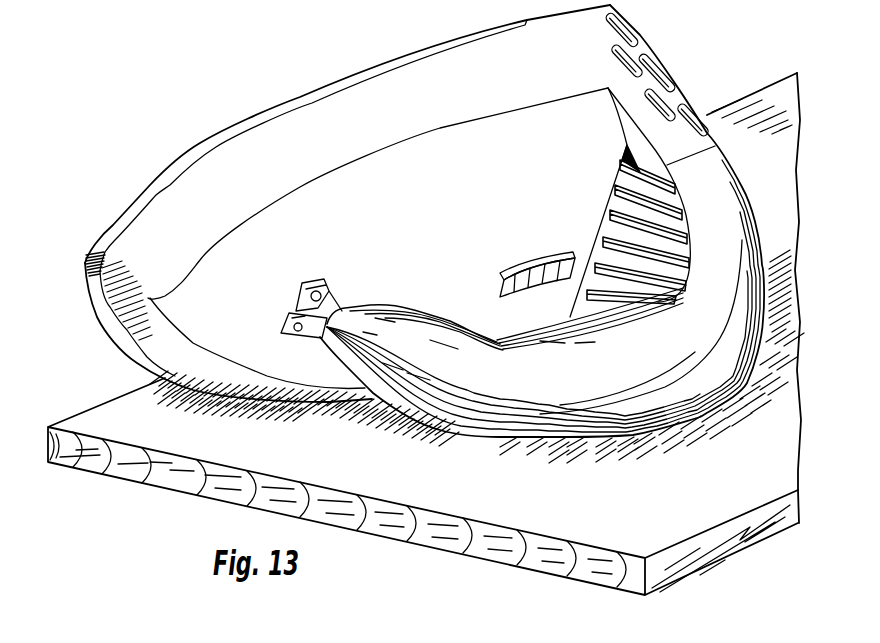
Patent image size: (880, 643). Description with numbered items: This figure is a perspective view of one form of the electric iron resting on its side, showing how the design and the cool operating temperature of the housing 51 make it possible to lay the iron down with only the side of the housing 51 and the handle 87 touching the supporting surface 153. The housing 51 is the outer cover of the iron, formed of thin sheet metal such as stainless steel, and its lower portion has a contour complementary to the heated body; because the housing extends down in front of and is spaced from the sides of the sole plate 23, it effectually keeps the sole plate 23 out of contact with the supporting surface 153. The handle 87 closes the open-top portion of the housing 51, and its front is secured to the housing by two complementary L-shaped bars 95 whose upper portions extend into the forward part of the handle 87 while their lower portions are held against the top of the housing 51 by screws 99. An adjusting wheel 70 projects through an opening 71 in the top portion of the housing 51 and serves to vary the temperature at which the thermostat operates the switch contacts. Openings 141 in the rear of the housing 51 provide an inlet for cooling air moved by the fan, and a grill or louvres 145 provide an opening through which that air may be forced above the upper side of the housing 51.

The sole plate 23 is at (128, 212).
The housing 51 is at (157, 366).
The wheel 70 is at (531, 267).
The opening 71 is at (494, 290).
The handle 87 is at (472, 435).
The complementary bars 95 is at (300, 313).
The screws 99 is at (303, 288).
The openings 141 is at (648, 60).
The louvres 145 is at (623, 216).
The supporting surface 153 is at (93, 418).